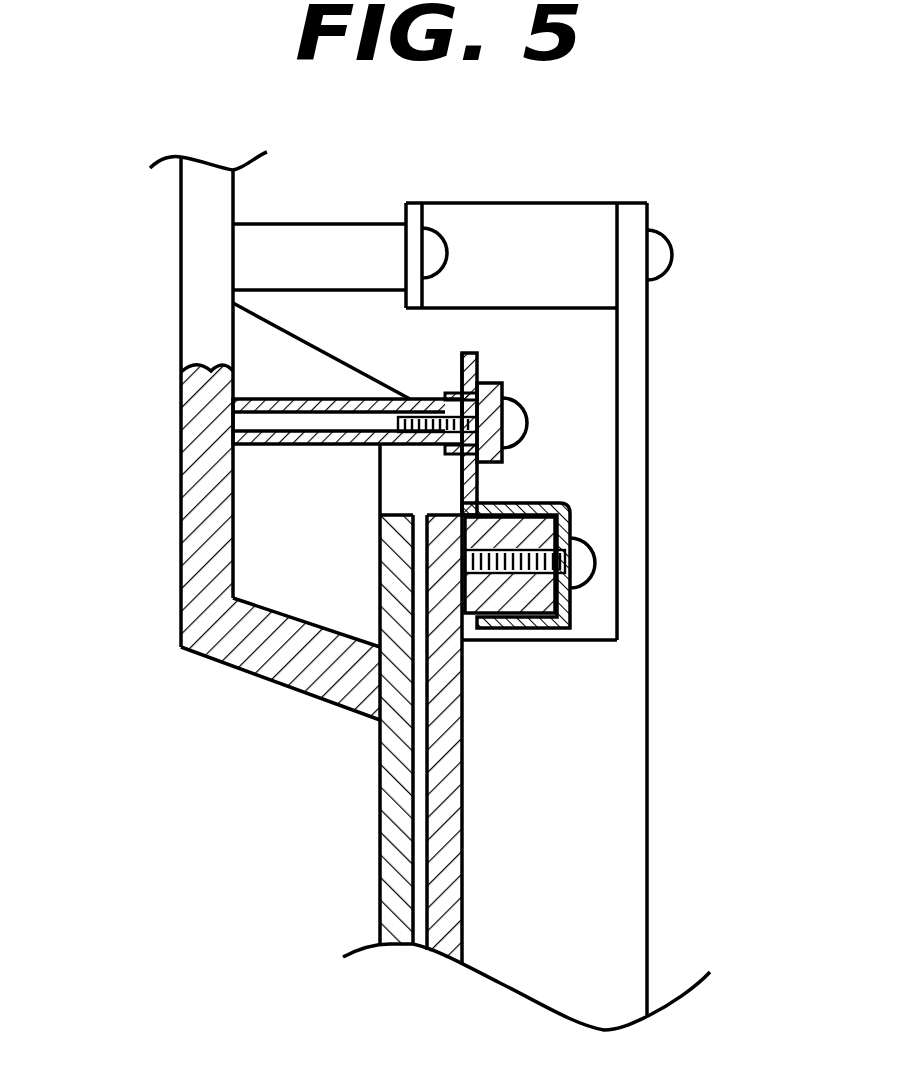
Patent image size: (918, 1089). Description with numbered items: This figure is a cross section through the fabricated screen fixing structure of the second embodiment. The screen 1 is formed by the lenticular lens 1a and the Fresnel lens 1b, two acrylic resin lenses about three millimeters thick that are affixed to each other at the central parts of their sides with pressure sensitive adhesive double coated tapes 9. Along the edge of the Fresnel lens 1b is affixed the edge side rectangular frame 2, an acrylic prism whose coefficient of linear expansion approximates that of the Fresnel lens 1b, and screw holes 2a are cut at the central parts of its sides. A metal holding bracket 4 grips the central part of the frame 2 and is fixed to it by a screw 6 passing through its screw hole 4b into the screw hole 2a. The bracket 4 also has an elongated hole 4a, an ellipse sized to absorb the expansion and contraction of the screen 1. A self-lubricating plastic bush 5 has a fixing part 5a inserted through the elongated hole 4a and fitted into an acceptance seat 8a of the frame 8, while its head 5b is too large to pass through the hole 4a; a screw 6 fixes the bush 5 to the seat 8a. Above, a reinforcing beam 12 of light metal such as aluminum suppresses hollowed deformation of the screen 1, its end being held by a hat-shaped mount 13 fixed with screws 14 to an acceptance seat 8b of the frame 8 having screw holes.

The screen 1 is at (342, 659).
The lenticular lens 1a is at (388, 843).
The Fresnel lens 1b is at (430, 883).
The edge side rectangular frame 2 is at (515, 629).
The screw holes 2a is at (490, 612).
The holding brackets 4 is at (508, 469).
The elongated holes 4a is at (464, 386).
The screw holes 4b is at (598, 570).
The bushes 5 is at (522, 390).
The fixing parts 5a is at (447, 393).
The heads 5b is at (492, 386).
The screws 6 is at (528, 417).
The frame 8 is at (187, 345).
The acceptance seats 8a is at (275, 445).
The acceptance seats 8b is at (323, 233).
The pressure sensitive adhesive double coated tapes 9 is at (410, 571).
The reinforcing beam 12 is at (633, 882).
The mounts 13 is at (542, 212).
The screws 14 is at (665, 252).